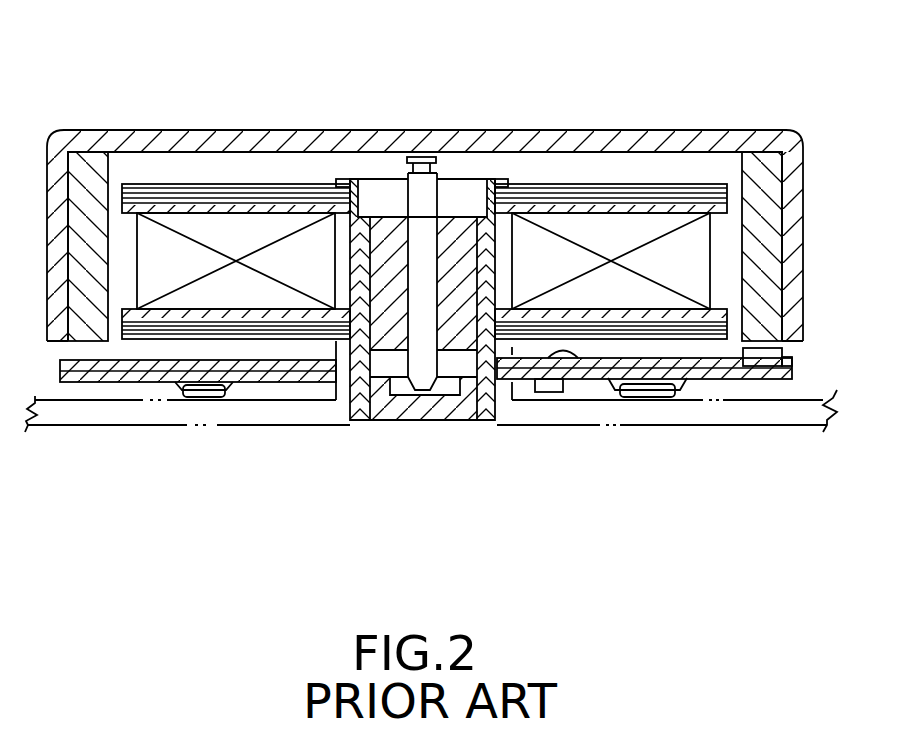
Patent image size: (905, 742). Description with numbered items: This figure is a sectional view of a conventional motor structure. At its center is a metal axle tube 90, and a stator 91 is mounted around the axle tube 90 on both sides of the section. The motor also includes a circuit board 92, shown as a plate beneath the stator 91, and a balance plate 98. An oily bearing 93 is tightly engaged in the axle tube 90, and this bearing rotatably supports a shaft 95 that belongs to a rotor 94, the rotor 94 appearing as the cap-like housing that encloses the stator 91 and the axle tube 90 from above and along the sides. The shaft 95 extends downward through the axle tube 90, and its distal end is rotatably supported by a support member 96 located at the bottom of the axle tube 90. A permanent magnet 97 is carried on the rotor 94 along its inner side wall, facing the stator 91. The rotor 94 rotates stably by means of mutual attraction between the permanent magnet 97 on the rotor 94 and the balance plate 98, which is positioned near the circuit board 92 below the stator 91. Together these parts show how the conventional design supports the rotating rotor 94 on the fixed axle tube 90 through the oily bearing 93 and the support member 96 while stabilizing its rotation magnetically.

The axle tube 90 is at (392, 237).
The stator 91 is at (627, 183).
The circuit board 92 is at (712, 376).
The oily bearing 93 is at (381, 217).
The rotor 94 is at (178, 132).
The shaft 95 is at (428, 213).
The support member 96 is at (437, 403).
The permanent magnet 97 is at (765, 183).
The balance plate 98 is at (580, 378).